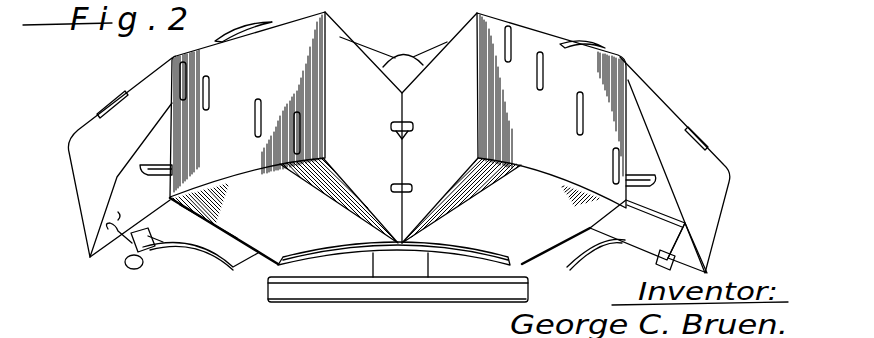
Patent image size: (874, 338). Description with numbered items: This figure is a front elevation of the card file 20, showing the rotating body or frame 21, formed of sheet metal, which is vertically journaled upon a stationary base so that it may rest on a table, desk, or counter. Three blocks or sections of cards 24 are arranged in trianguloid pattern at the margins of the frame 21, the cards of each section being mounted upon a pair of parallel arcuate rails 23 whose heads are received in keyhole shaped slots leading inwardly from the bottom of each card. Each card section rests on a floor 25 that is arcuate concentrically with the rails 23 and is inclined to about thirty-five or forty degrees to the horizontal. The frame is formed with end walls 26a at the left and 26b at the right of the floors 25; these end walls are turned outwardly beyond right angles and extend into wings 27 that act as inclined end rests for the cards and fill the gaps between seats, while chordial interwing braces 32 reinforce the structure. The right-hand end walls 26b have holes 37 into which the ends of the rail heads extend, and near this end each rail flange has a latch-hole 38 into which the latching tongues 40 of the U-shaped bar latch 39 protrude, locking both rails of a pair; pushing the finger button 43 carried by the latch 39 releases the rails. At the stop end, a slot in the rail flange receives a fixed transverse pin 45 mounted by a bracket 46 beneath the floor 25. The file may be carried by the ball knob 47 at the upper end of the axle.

The card file 20 is at (412, 47).
The rotating body or frame 21 is at (677, 213).
The rails 23 is at (410, 133).
The blocks or sections of cards 24 is at (340, 36).
The floor of card section seat 25 is at (197, 243).
The left end wall 26a is at (667, 193).
The right end wall 26b is at (120, 177).
The wings 27 is at (160, 133).
The chordial interwing braces 32 is at (160, 180).
The holes 37 is at (118, 220).
The latch-hole 38 is at (130, 249).
The latch 39 is at (153, 249).
The latching tongues 40 is at (141, 232).
The finger button 43 is at (131, 269).
The fixed transverse pin 45 is at (677, 267).
The bracket 46 is at (640, 257).
The ball knob 47 is at (396, 68).